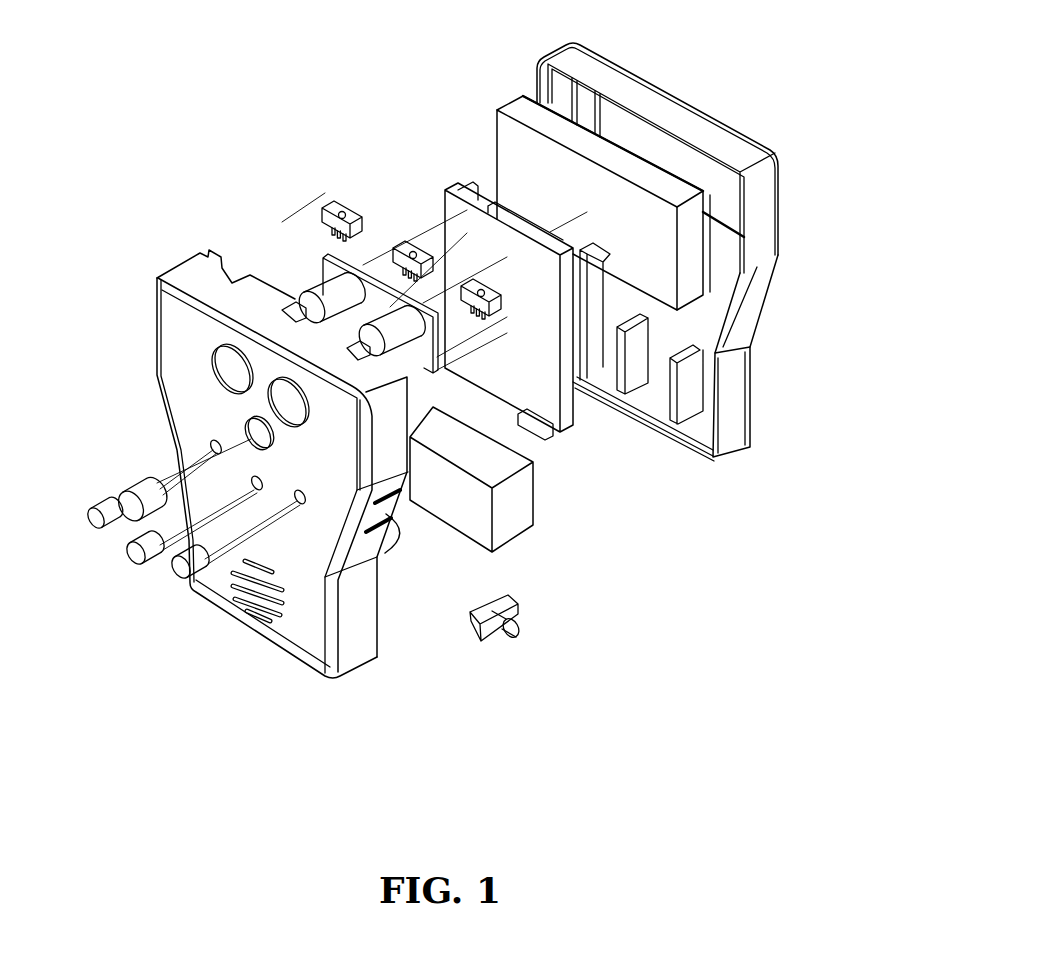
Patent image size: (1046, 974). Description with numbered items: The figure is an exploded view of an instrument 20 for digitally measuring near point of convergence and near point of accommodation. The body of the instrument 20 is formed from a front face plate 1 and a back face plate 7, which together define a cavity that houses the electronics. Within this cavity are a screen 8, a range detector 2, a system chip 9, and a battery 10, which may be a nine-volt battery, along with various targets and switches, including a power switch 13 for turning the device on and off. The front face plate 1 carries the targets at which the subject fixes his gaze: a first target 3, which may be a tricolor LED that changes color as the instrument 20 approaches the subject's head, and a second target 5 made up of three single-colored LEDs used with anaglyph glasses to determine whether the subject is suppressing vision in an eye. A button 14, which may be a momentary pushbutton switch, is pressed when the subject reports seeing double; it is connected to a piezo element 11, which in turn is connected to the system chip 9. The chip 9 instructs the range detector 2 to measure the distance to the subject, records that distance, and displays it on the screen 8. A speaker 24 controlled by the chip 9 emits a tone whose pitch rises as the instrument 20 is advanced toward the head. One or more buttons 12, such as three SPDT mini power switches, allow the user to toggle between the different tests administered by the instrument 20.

The front face plate 1 is at (338, 676).
The range detector 2 is at (323, 258).
The first target 3 is at (125, 486).
The second target 5 is at (141, 563).
The back face plate 7 is at (677, 97).
The screen 8 is at (495, 112).
The system chip 9 is at (569, 421).
The battery 10 is at (509, 554).
The piezo element 11 is at (396, 553).
The buttons 12 is at (353, 203).
The power switch 13 is at (300, 302).
The button 14 is at (483, 648).
The instrument 20 is at (623, 646).
The speaker 24 is at (257, 587).